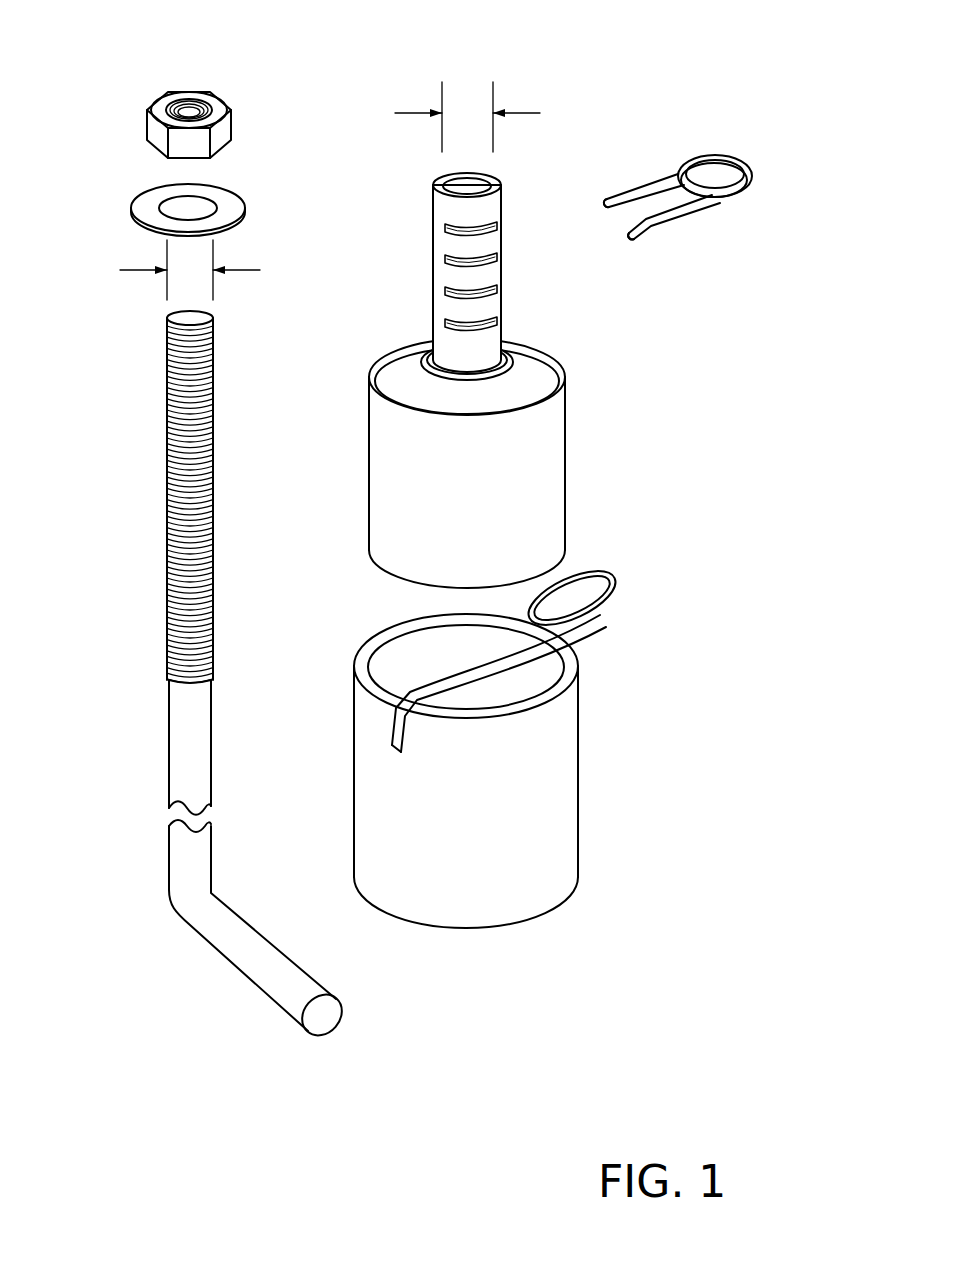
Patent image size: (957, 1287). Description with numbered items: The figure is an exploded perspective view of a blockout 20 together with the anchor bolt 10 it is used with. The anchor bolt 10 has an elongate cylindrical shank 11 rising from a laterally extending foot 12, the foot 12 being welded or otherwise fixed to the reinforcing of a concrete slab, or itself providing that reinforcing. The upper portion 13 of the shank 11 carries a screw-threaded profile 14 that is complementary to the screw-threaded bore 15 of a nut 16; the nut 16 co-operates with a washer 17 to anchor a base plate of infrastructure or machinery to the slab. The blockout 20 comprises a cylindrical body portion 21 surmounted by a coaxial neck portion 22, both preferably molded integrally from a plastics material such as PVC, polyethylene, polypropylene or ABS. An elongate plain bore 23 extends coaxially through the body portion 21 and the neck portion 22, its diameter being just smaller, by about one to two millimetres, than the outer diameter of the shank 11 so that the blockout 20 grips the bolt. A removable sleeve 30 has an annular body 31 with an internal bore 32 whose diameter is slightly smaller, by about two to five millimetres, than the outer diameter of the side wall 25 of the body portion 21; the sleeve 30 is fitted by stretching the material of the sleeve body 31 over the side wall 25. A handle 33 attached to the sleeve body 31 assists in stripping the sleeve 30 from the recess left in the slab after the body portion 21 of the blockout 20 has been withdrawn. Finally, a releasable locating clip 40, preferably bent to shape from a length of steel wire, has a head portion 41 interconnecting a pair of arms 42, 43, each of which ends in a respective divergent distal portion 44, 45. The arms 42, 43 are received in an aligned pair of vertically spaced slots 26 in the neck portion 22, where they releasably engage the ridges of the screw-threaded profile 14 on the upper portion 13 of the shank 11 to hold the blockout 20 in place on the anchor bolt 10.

The anchor bolt 10 is at (250, 617).
The elongate cylindrical shank 11 is at (214, 747).
The laterally extending foot 12 is at (304, 955).
The upper portion of the shank 13 is at (228, 490).
The screw-threaded profile 14 is at (192, 407).
The screw-threaded bore 15 is at (191, 105).
The nut 16 is at (255, 79).
The washer 17 is at (250, 210).
The blockout 20 is at (702, 387).
The cylindrical body portion 21 is at (568, 500).
The neck portion 22 is at (489, 231).
The elongate plain bore 23 is at (470, 188).
The side wall 25 is at (493, 522).
The slots 26 is at (448, 228).
The removable sleeve 30 is at (609, 860).
The annular body 31 is at (586, 790).
The internal bore 32 is at (412, 658).
The handle 33 is at (620, 624).
The releasable locating clip 40 is at (772, 134).
The head portion 41 is at (760, 178).
The first arm 42 is at (612, 157).
The second arm 43 is at (650, 248).
The divergent distal portion of the first arm 44 is at (607, 203).
The divergent distal portion of the second arm 45 is at (630, 236).